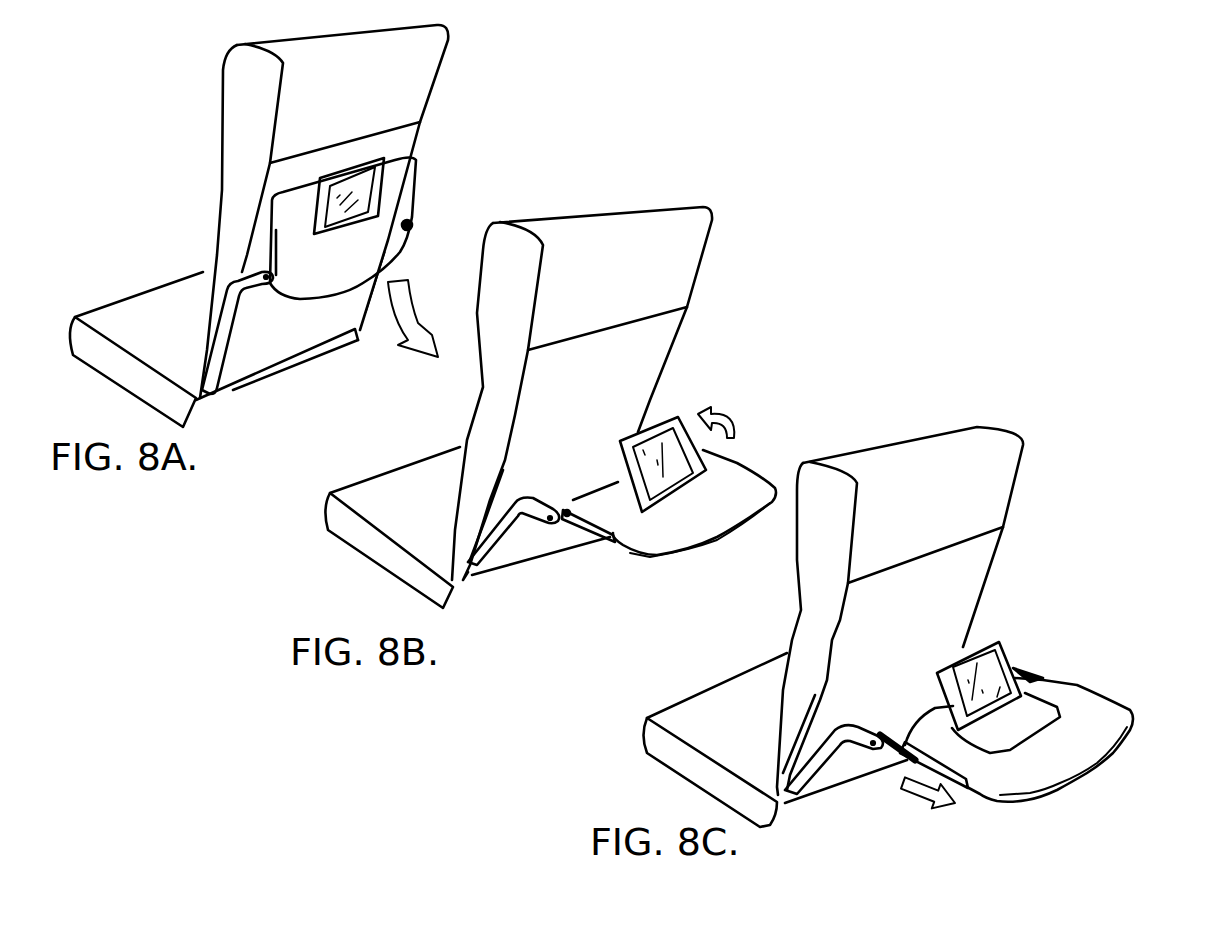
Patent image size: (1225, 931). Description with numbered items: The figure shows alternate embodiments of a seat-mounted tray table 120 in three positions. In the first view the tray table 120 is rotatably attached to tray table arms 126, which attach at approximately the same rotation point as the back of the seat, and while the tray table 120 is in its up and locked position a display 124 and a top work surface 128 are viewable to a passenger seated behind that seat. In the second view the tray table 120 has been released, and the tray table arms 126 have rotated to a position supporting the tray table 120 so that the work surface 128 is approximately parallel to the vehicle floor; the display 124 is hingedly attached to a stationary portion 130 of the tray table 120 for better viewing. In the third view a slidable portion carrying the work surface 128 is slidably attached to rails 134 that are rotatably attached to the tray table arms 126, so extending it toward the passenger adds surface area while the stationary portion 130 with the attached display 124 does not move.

In FIG. 8A, the tray table 120 is at (411, 208).
In FIG. 8B, the tray table 120 is at (747, 477).
In FIG. 8C, the tray table 120 is at (1128, 711).
In FIG. 8A, the display 124 is at (403, 155).
In FIG. 8B, the display 124 is at (702, 416).
In FIG. 8C, the display 124 is at (1003, 652).
In FIG. 8A, the tray table arms 126 is at (227, 283).
In FIG. 8B, the tray table arms 126 is at (510, 525).
In FIG. 8C, the tray table arms 126 is at (810, 773).
In FIG. 8B, the work surface 128 is at (692, 515).
In FIG. 8C, the work surface 128 is at (1065, 763).
In FIG. 8B, the stationary portion 130 is at (620, 497).
In FIG. 8C, the stationary portion 130 is at (1003, 732).
In FIG. 8C, the rails 134 is at (1040, 676).